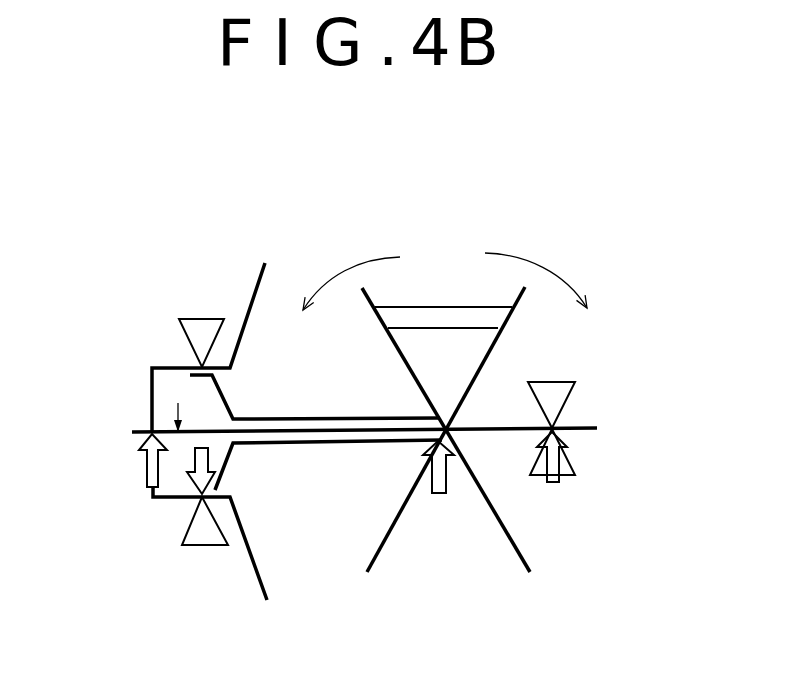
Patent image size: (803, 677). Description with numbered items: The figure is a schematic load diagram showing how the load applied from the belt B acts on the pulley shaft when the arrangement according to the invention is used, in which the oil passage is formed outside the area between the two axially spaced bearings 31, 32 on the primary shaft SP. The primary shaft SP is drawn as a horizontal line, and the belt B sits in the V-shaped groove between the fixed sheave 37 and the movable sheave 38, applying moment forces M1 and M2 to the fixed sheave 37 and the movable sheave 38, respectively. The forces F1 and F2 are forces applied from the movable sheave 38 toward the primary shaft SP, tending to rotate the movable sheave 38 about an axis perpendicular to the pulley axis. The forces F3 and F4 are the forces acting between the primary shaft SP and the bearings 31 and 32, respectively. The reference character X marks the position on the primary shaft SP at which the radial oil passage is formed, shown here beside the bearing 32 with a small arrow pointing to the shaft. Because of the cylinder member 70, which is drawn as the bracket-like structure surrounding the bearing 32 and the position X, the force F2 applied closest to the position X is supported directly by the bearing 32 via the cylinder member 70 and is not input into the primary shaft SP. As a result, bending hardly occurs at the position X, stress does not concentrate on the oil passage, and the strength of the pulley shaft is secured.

The primary shaft SP is at (140, 432).
The cylinder member 70 is at (168, 367).
The oil passage position X is at (178, 401).
The bearing 32 is at (195, 317).
The fixed sheave 37 is at (520, 298).
The movable sheave 38 is at (397, 511).
The belt B is at (437, 322).
The moment force M1 is at (536, 268).
The moment force M2 is at (351, 270).
The bearing 31 is at (565, 473).
The force F1 is at (443, 475).
The force F2 is at (203, 462).
The force F3 is at (565, 452).
The force F4 is at (147, 468).